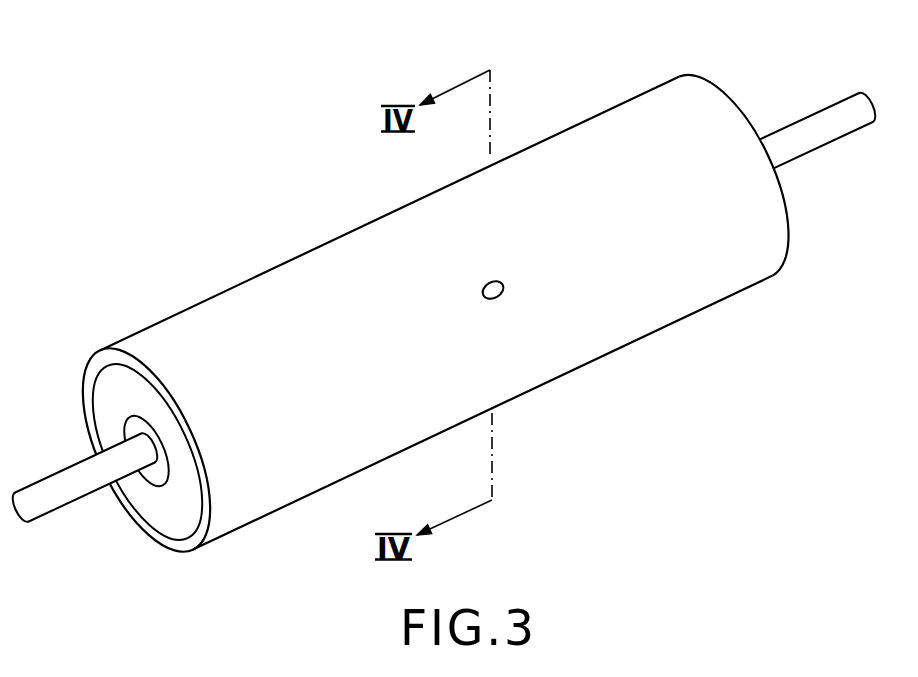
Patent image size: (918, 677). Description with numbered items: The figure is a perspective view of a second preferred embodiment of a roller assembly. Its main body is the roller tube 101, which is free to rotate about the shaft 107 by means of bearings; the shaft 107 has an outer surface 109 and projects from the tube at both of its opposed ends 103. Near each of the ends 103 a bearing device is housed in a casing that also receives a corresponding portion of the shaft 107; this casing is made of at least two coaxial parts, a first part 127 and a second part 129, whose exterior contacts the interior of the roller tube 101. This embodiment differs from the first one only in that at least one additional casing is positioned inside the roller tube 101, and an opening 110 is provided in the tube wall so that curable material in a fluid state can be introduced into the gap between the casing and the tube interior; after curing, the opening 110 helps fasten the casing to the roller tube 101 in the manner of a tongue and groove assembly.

The roller tube 101 is at (275, 297).
The opposed ends 103 is at (110, 357).
The shaft 107 is at (444, 304).
The outer surface 109 is at (60, 468).
The opening 110 is at (498, 284).
The first part 127 is at (162, 465).
The second part 129 is at (112, 385).